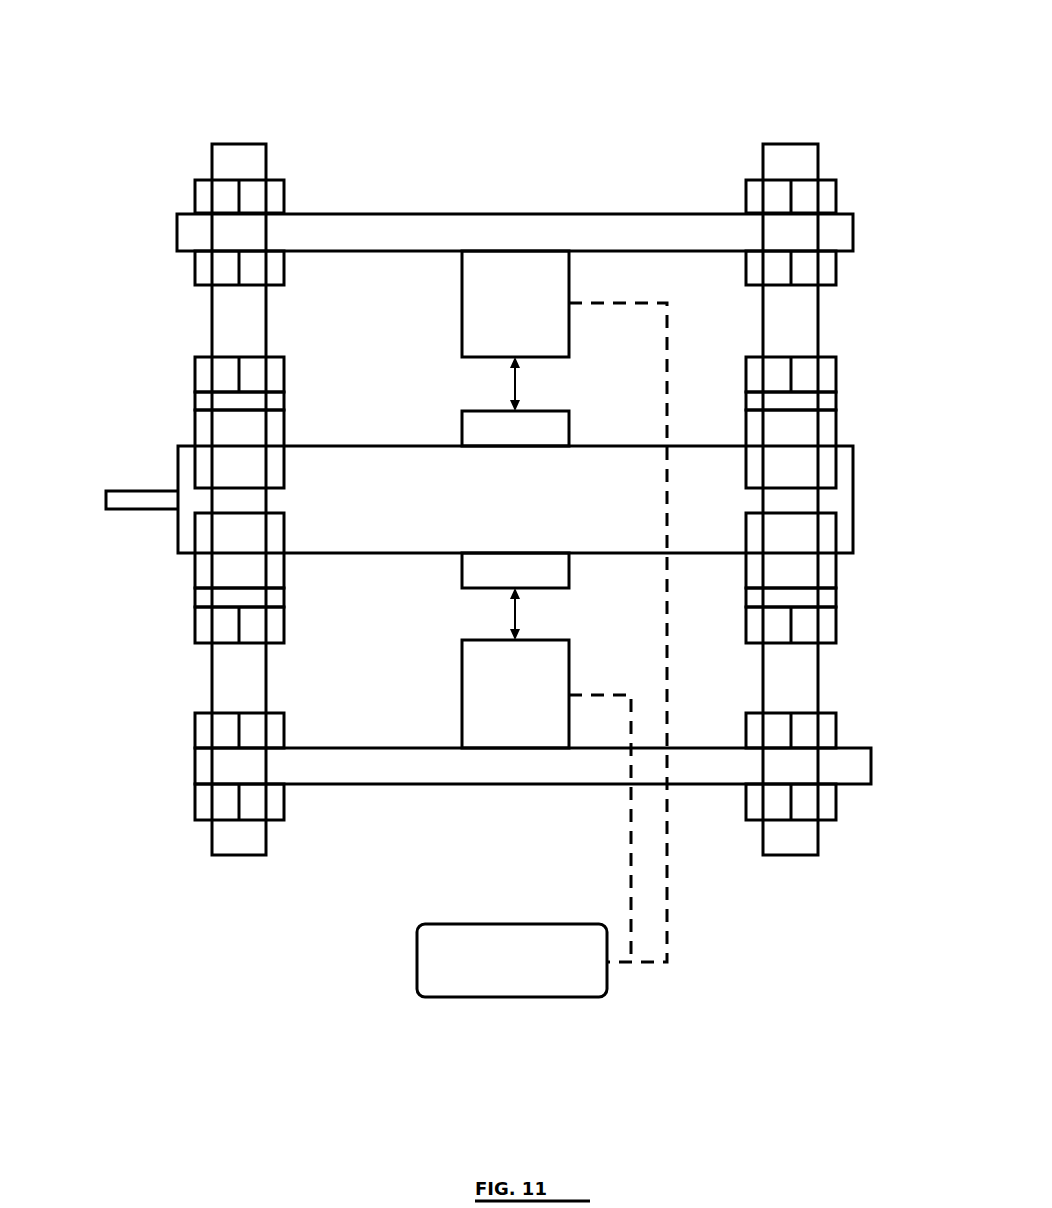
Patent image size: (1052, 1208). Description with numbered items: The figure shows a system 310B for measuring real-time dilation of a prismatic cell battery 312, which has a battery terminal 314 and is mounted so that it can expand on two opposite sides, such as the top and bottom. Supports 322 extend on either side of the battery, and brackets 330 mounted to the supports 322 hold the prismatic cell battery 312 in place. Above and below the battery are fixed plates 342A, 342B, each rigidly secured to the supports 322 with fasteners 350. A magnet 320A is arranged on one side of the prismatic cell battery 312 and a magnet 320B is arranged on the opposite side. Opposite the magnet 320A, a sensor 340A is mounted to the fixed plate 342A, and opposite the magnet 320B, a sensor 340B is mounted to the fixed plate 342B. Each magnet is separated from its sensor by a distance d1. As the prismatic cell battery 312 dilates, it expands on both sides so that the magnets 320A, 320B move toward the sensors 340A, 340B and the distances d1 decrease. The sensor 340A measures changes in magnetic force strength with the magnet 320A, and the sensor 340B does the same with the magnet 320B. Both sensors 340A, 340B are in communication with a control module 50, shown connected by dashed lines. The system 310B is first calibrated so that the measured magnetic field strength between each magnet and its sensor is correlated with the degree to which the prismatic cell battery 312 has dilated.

The system 310B is at (252, 76).
The supports 322 is at (237, 144).
The fasteners 350 is at (195, 197).
The fixed plate 342A is at (364, 214).
The fixed plate 342B is at (363, 784).
The sensor 340A is at (462, 303).
The sensor 340B is at (462, 695).
The magnet 320A is at (462, 437).
The magnet 320B is at (462, 572).
The brackets 330 is at (195, 418).
The prismatic cell battery 312 is at (328, 483).
The battery terminal 314 is at (106, 500).
The control module 50 is at (501, 923).
The distances d1 is at (515, 390).